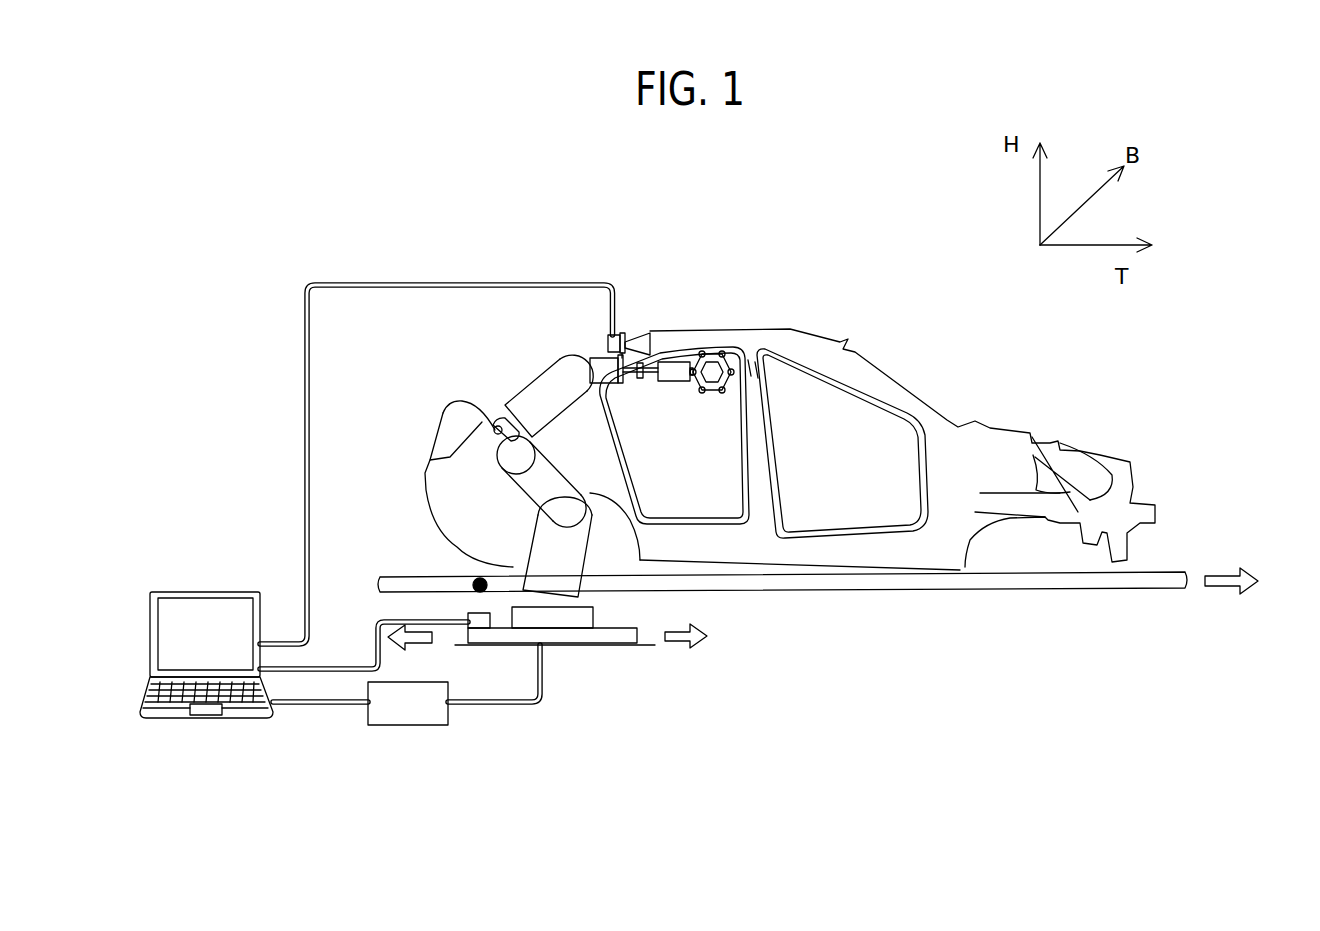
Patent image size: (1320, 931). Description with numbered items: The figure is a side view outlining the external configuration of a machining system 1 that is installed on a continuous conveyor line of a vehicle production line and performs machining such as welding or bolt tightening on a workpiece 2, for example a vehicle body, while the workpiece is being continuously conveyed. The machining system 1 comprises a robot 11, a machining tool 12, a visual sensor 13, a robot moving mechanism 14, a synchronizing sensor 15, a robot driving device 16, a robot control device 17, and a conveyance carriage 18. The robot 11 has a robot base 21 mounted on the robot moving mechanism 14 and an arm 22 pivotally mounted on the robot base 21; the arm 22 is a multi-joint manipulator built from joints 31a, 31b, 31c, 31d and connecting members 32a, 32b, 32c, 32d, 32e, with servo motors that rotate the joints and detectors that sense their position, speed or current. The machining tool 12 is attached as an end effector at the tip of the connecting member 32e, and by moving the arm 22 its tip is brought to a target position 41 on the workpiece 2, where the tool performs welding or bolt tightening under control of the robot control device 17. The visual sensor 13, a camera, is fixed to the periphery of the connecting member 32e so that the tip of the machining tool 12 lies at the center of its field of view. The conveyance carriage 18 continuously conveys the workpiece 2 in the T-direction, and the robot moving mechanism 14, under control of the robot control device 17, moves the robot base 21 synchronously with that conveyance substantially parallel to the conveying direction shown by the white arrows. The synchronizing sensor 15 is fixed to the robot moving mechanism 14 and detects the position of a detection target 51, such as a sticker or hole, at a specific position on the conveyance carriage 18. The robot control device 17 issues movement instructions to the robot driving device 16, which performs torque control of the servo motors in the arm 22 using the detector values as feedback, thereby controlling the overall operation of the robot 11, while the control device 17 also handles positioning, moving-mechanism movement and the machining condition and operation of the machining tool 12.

The machining system 1 is at (890, 733).
The workpiece 2 is at (836, 340).
The robot 11 is at (619, 537).
The machining tool 12 is at (680, 380).
The visual sensor 13 is at (652, 345).
The robot moving mechanism 14 is at (625, 647).
The synchronizing sensor 15 is at (468, 620).
The robot driving device 16 is at (450, 724).
The robot control device 17 is at (205, 592).
The conveyance carriage 18 is at (1076, 590).
The robot base 21 is at (506, 590).
The arm 22 is at (612, 456).
The joint 31a is at (568, 518).
The joint 31b is at (503, 452).
The joint 31c is at (494, 438).
The joint 31d is at (548, 372).
The connecting member 32a is at (568, 580).
The connecting member 32b is at (537, 478).
The connecting member 32c is at (503, 392).
The connecting member 32d is at (553, 397).
The connecting member 32e is at (602, 380).
The target position 41 is at (745, 372).
The detection target 51 is at (470, 578).